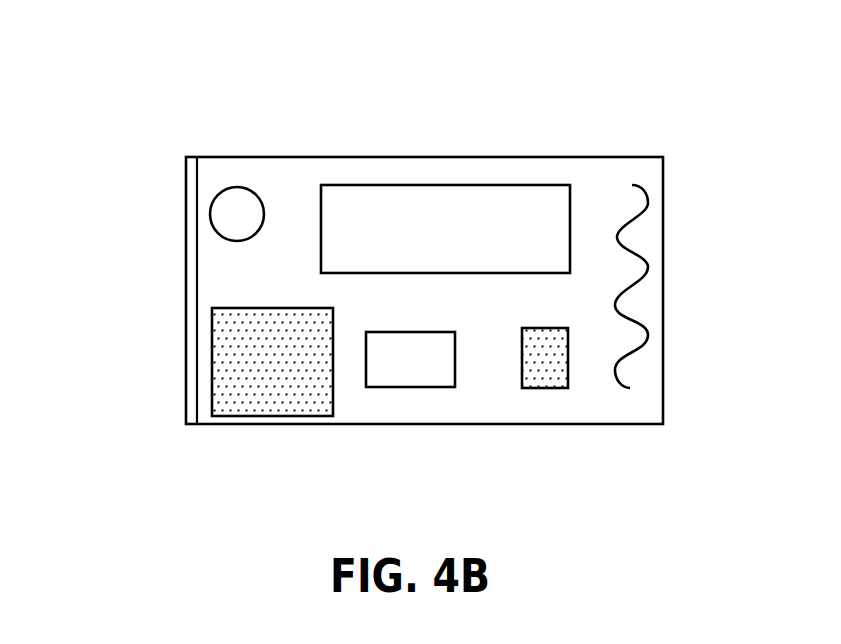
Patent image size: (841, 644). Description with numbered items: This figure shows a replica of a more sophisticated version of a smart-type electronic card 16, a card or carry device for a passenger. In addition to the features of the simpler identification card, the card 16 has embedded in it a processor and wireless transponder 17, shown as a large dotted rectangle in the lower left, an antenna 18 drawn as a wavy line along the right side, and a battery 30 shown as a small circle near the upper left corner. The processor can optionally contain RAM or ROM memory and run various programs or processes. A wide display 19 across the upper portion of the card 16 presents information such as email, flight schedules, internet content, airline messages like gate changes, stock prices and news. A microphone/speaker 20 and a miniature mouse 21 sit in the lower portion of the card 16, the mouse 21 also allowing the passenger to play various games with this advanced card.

The electronic card 16 is at (287, 173).
The battery 30 is at (223, 202).
The display 19 is at (405, 198).
The antenna 18 is at (637, 250).
The processor and wireless transponder 17 is at (225, 371).
The miniature mouse 21 is at (413, 369).
The microphone/speaker 20 is at (543, 370).